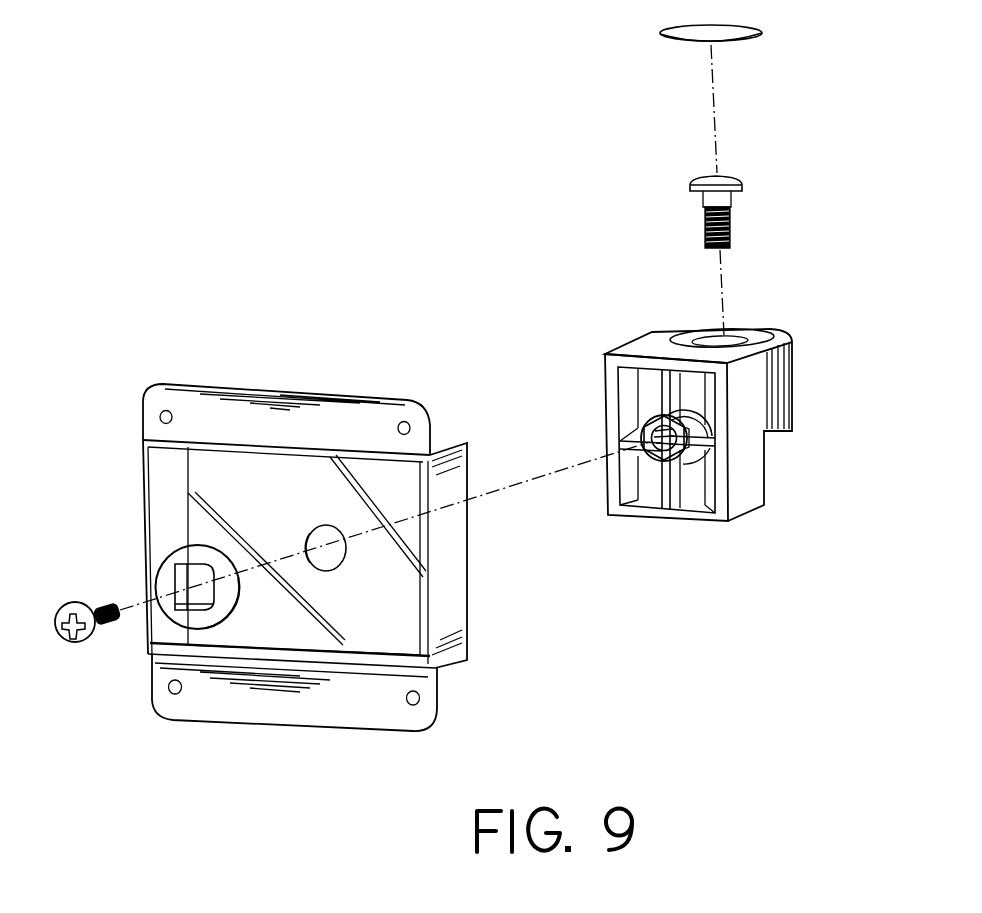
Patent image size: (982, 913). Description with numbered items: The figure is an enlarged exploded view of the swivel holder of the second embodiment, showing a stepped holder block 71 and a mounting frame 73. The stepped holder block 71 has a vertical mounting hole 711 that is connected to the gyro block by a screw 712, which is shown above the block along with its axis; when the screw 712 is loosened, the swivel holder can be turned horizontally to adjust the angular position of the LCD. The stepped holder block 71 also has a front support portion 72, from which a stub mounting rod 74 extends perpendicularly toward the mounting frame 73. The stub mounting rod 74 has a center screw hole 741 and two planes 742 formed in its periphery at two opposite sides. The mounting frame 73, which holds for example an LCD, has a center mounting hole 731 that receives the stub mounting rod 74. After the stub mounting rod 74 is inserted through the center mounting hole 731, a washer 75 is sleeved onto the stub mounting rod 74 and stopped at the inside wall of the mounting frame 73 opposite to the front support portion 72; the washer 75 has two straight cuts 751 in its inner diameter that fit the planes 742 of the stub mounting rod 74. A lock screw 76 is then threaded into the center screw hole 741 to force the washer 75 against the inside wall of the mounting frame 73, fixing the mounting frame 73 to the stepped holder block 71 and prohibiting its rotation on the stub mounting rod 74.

The stepped holder block 71 is at (768, 390).
The vertical mounting hole 711 is at (740, 330).
The screw 712 is at (728, 201).
The front support portion 72 is at (748, 470).
The mounting frame 73 is at (455, 592).
The center mounting hole 731 is at (330, 557).
The stub mounting rod 74 is at (659, 419).
The center screw hole 741 is at (654, 460).
The planes 742 is at (695, 450).
The washer 75 is at (228, 605).
The straight cuts 751 is at (173, 582).
The lock screw 76 is at (90, 642).